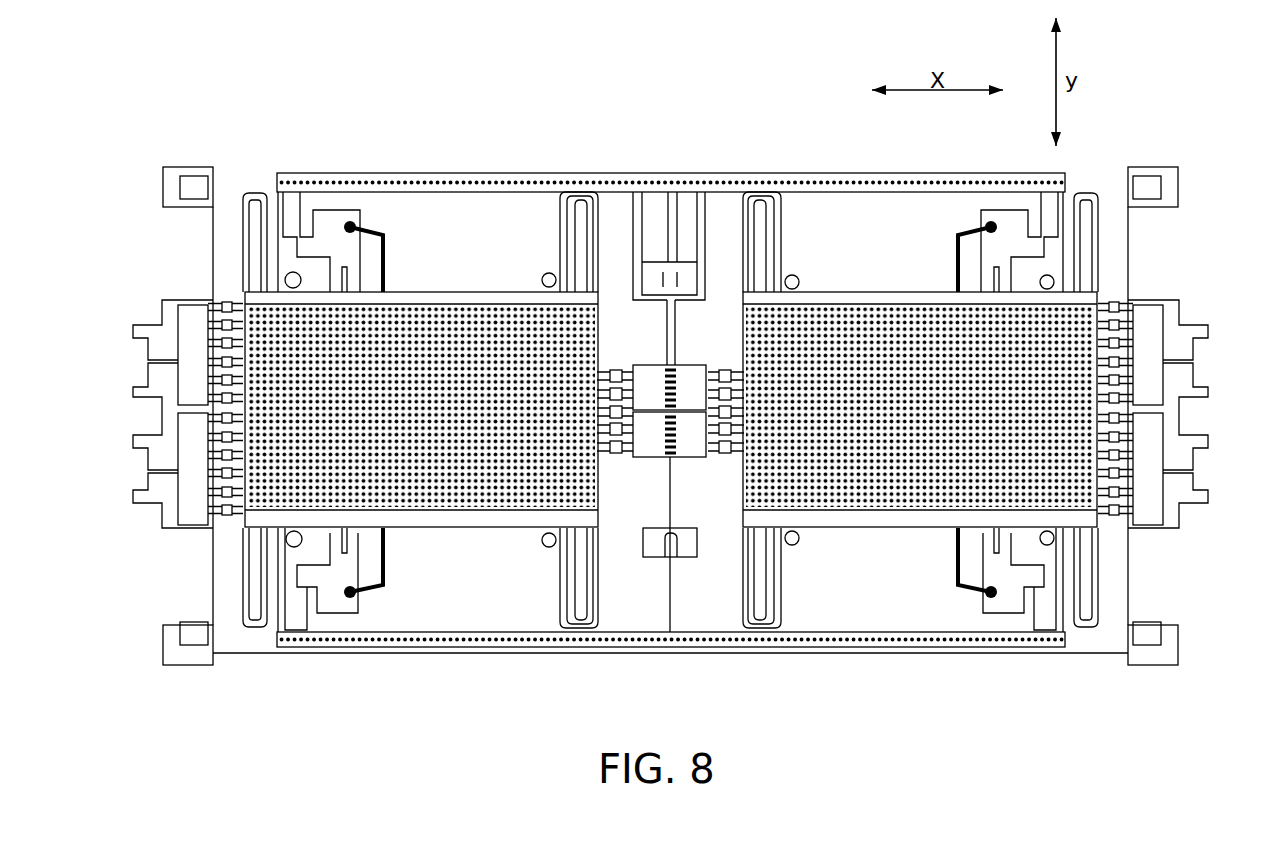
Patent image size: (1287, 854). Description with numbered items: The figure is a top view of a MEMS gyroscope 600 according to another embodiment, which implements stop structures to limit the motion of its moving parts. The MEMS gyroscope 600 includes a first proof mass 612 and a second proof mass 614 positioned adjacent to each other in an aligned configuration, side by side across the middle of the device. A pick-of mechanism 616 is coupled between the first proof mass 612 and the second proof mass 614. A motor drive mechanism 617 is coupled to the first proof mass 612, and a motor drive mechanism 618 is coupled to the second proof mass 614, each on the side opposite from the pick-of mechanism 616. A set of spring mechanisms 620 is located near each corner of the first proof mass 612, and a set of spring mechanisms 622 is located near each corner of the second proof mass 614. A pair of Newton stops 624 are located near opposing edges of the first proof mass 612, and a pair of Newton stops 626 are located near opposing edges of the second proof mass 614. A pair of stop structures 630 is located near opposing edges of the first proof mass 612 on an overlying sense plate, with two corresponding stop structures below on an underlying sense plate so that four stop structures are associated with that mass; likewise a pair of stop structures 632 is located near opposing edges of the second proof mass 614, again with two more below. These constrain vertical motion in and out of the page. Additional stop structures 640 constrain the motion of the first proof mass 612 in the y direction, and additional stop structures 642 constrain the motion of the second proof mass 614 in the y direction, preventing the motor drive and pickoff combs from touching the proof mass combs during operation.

The MEMS gyroscope 600 is at (599, 114).
The first proof mass 612 is at (452, 330).
The second proof mass 614 is at (875, 330).
The pick-of mechanism 616 is at (658, 372).
The motor drive mechanism 617 is at (187, 503).
The motor drive mechanism 618 is at (1157, 327).
The spring mechanisms 620 is at (245, 224).
The spring mechanisms 622 is at (742, 213).
The Newton stops 624 is at (337, 246).
The Newton stops 626 is at (1002, 248).
The stop structures 630 is at (440, 292).
The stop structures 632 is at (938, 297).
The additional stop structures 640 is at (289, 278).
The additional stop structures 642 is at (803, 280).